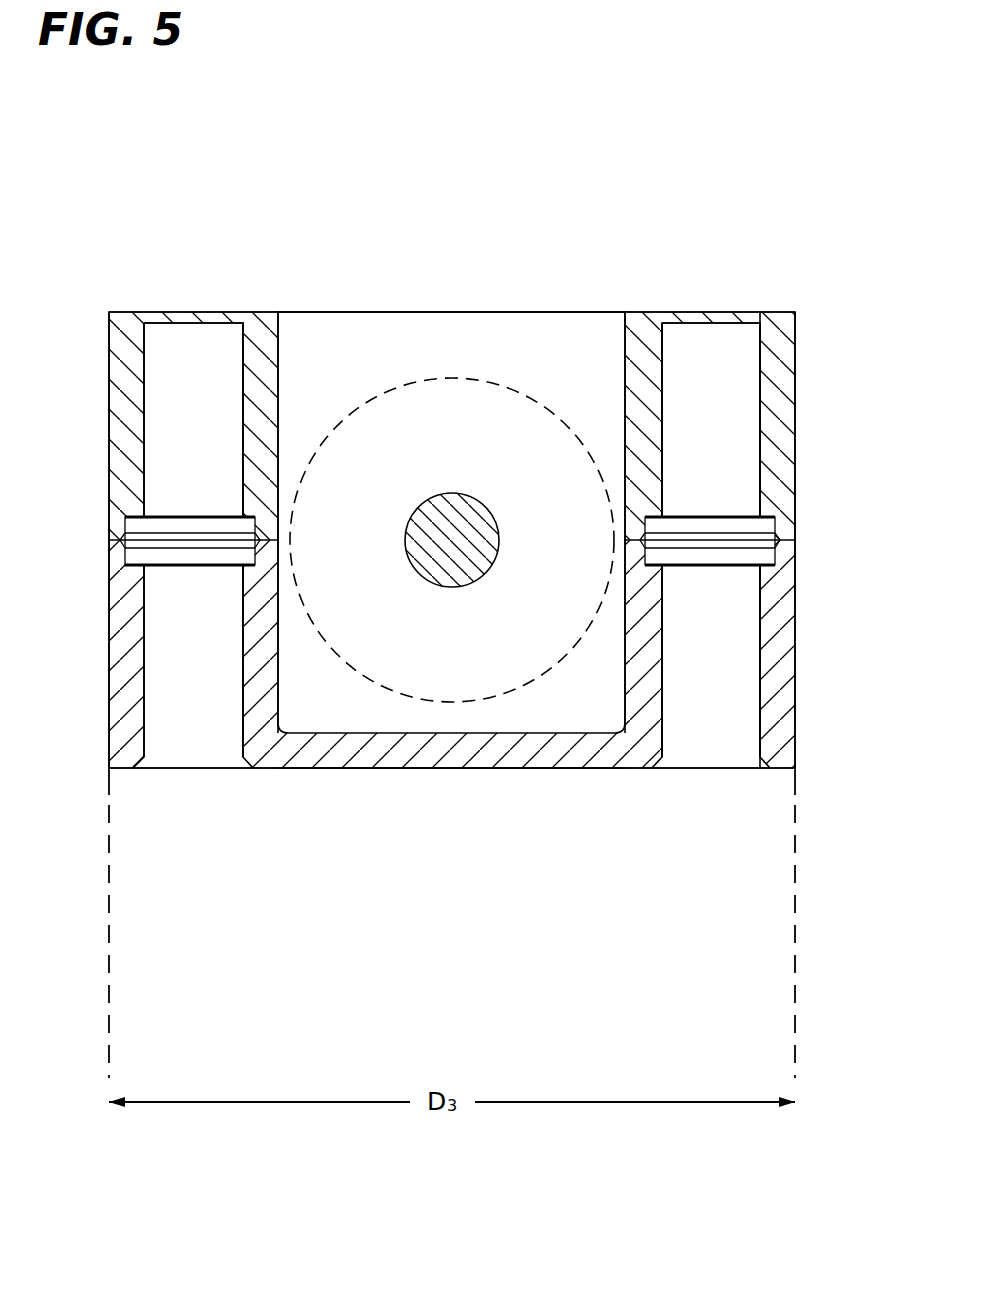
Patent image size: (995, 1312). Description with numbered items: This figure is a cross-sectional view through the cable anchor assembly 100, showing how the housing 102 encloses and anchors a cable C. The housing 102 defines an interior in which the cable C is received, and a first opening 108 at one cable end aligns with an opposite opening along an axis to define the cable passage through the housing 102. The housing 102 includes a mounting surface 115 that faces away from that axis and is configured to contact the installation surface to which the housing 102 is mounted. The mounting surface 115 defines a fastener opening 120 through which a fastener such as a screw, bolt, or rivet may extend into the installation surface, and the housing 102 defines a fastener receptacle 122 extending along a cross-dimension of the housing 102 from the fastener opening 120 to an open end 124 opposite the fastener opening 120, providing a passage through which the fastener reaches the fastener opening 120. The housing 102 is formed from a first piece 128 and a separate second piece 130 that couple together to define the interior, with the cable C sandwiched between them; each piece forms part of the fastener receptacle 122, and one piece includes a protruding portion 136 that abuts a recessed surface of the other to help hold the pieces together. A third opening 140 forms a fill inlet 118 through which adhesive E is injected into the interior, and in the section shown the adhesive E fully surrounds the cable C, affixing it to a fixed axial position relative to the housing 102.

The cable anchor assembly 100 is at (88, 352).
The housing 102 is at (301, 781).
The first opening 108 is at (523, 395).
The mounting surface 115 is at (388, 770).
The fill inlet 118 is at (396, 312).
The fastener opening 120 is at (662, 762).
The fastener receptacle 122 is at (146, 672).
The open end 124 is at (763, 320).
The first piece 128 is at (96, 745).
The second piece 130 is at (105, 422).
The protruding portion 136 is at (775, 527).
The third opening 140 is at (282, 350).
The cable C is at (452, 493).
The adhesive E is at (343, 350).